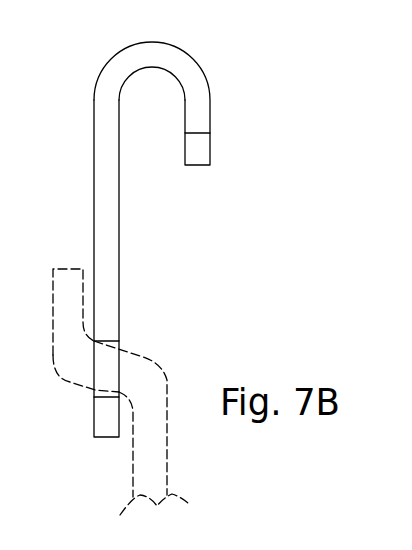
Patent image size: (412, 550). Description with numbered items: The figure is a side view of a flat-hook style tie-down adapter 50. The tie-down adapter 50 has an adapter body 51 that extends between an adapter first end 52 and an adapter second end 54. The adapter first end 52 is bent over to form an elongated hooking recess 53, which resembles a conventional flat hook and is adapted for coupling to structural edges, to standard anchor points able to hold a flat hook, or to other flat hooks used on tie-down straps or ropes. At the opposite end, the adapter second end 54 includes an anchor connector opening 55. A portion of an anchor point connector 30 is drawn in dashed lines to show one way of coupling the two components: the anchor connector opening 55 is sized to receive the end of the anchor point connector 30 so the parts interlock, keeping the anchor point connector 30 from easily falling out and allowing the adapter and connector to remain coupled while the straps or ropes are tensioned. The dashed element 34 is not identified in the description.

The anchor point connector 30 is at (167, 468).
The clip 34 is at (53, 310).
The tie-down adapter 50 is at (82, 127).
The adapter body 51 is at (96, 215).
The adapter first end 52 is at (187, 50).
The elongated hooking recess 53 is at (153, 123).
The adapter second end 54 is at (94, 430).
The anchor connector opening 55 is at (97, 388).